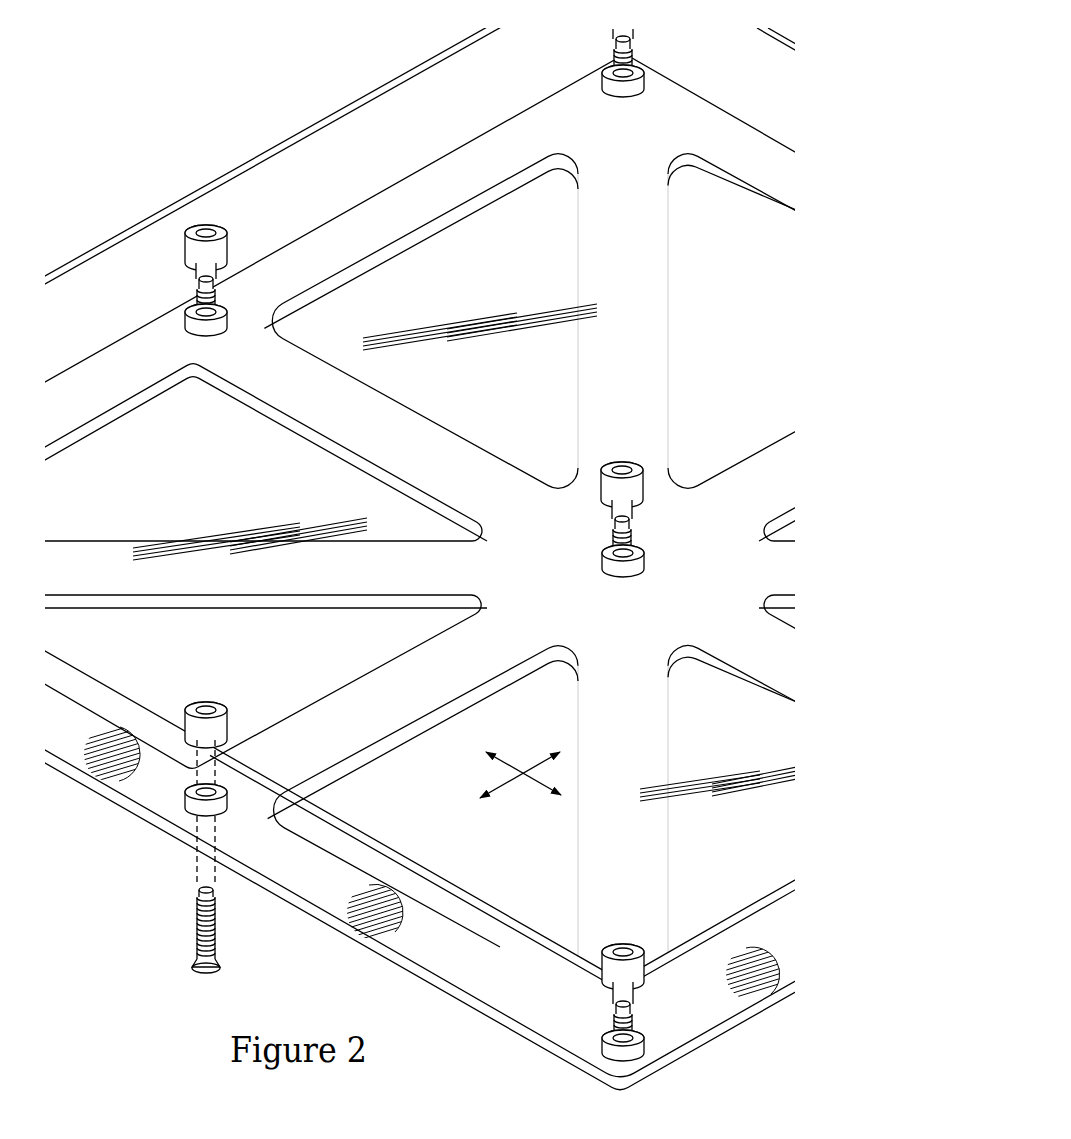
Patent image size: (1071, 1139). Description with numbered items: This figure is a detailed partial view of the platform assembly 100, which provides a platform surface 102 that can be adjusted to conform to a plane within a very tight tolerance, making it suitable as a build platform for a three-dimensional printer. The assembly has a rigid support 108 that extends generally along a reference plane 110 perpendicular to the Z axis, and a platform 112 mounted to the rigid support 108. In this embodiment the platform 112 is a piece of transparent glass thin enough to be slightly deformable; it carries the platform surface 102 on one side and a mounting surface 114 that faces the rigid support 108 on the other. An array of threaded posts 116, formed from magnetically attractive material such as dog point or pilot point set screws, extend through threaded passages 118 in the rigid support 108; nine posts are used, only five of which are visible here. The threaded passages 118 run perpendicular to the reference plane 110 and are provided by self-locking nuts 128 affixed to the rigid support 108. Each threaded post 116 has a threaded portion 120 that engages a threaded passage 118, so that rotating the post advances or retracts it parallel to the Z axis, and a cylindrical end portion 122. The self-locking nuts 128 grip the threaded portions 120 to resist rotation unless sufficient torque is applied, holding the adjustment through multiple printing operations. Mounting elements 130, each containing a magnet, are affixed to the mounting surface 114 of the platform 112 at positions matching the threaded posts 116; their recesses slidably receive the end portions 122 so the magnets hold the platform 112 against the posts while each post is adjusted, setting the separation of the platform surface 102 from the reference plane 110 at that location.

The platform assembly 100 is at (535, 553).
The platform surface 102 is at (535, 502).
The rigid support 108 is at (420, 572).
The reference plane 110 is at (519, 794).
The platform 112 is at (304, 124).
The mounting surface 114 is at (515, 927).
The threaded post 116 is at (404, 530).
The threaded passage 118 is at (198, 806).
The threaded portion 120 is at (216, 946).
The cylindrical end portion 122 is at (196, 900).
The self-locking nut 128 is at (203, 338).
The mounting element 130 is at (233, 223).